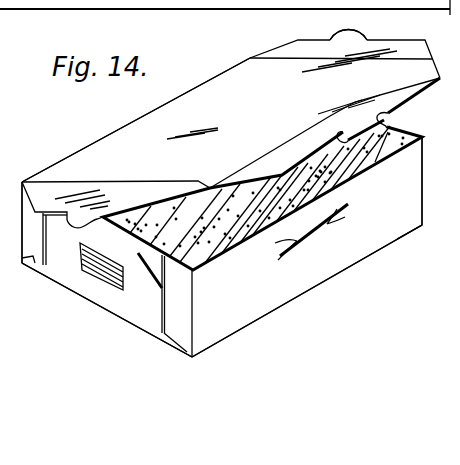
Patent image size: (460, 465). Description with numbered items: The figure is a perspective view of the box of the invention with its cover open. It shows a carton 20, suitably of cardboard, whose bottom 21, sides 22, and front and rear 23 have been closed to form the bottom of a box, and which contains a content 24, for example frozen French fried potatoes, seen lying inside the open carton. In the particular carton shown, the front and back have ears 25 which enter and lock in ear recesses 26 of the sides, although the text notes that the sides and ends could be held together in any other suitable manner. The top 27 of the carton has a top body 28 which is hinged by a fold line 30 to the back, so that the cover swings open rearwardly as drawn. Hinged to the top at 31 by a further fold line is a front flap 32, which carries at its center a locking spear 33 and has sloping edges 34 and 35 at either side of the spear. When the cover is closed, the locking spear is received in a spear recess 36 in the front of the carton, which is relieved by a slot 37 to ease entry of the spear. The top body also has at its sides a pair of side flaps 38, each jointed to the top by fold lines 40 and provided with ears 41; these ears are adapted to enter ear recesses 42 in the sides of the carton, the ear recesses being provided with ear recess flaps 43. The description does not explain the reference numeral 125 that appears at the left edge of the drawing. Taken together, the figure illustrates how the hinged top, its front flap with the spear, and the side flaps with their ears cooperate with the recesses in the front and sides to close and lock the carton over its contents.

The carton 20 is at (274, 298).
The bottom 21 is at (373, 254).
The sides 22 is at (422, 151).
The front and rear 23 is at (397, 227).
The content 24 is at (222, 230).
The ears 25 is at (24, 237).
The ear recesses 26 is at (33, 260).
The top 27 is at (118, 131).
The top body 28 is at (196, 118).
The fold line 30 is at (160, 108).
The fold line 31 is at (298, 134).
The front flap 32 is at (407, 80).
The locking spear 33 is at (391, 118).
The sloping edge 34 is at (322, 160).
The sloping edge 35 is at (412, 92).
The spear recess 36 is at (313, 212).
The slot 37 is at (283, 236).
The side flaps 38 is at (160, 195).
The fold lines 40 is at (68, 181).
The ears 41 is at (366, 38).
The ear recesses 42 is at (95, 272).
The ear recess flaps 43 is at (113, 276).
The end panel 125 is at (17, 200).